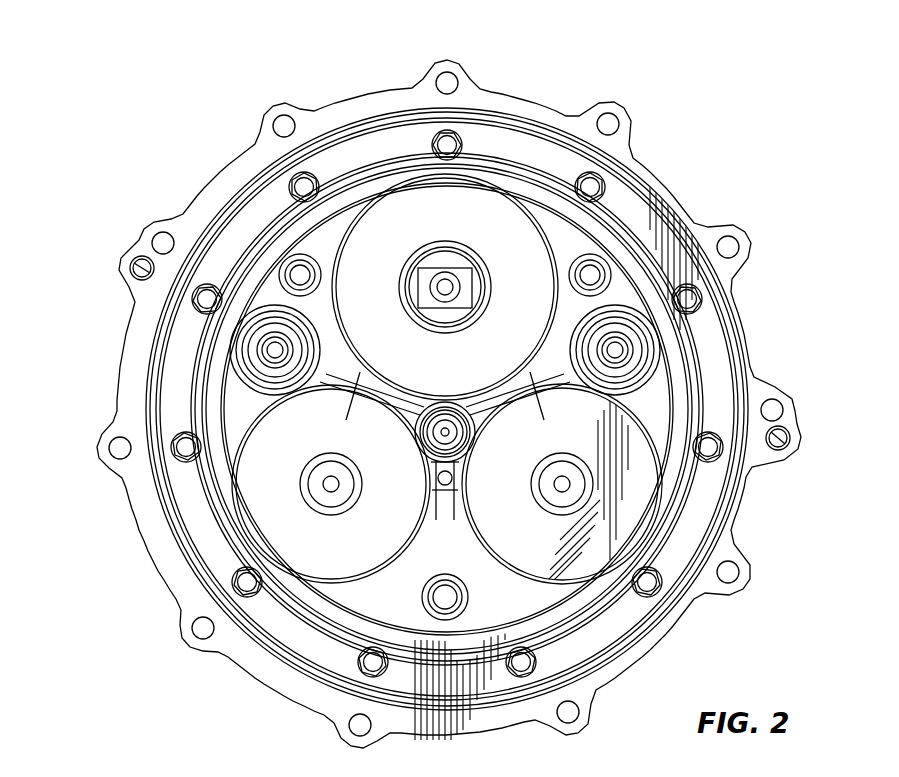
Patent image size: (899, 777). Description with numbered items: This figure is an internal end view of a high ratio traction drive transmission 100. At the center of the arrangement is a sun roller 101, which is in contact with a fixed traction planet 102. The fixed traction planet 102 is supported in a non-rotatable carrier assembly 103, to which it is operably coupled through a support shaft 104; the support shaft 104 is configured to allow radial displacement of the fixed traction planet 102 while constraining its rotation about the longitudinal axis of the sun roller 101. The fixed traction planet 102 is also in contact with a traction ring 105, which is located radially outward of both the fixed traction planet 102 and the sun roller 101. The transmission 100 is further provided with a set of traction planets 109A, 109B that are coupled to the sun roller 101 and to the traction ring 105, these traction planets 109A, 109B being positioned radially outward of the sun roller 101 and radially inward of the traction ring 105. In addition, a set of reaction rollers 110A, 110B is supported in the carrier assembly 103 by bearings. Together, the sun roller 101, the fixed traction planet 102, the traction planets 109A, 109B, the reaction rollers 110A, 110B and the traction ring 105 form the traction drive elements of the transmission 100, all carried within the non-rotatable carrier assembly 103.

The high ratio traction drive transmission 100 is at (126, 86).
The sun roller 101 is at (433, 497).
The fixed traction planet 102 is at (545, 222).
The non-rotatable carrier assembly 103 is at (712, 612).
The support shaft 104 is at (420, 287).
The traction ring 105 is at (531, 137).
The traction planet 109A is at (236, 432).
The traction planet 109B is at (642, 424).
The reaction roller 110A is at (238, 372).
The reaction roller 110B is at (635, 310).